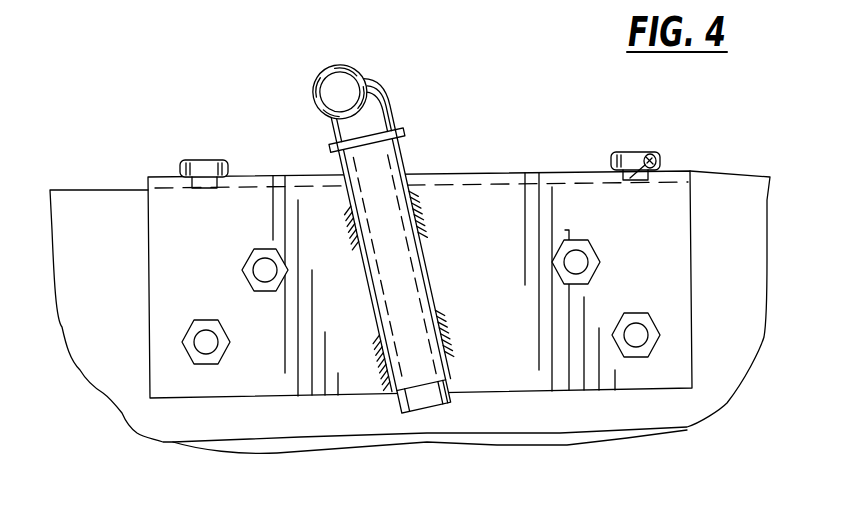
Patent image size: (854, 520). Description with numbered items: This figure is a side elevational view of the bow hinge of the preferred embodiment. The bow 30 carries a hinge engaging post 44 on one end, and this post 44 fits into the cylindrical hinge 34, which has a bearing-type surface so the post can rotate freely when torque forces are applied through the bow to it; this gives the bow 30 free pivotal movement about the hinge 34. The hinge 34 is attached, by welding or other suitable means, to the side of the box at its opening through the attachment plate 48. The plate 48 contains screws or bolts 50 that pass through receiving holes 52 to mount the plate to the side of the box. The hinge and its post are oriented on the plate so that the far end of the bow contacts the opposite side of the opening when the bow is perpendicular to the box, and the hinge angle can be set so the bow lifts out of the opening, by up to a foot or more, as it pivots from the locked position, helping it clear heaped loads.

The bow 30 is at (382, 100).
The cylindrical hinge 34 is at (343, 200).
The hinge engaging post 44 is at (420, 393).
The attachment plate 48 is at (489, 258).
The screw or bolt 50 is at (247, 256).
The receiving holes 52 is at (654, 157).